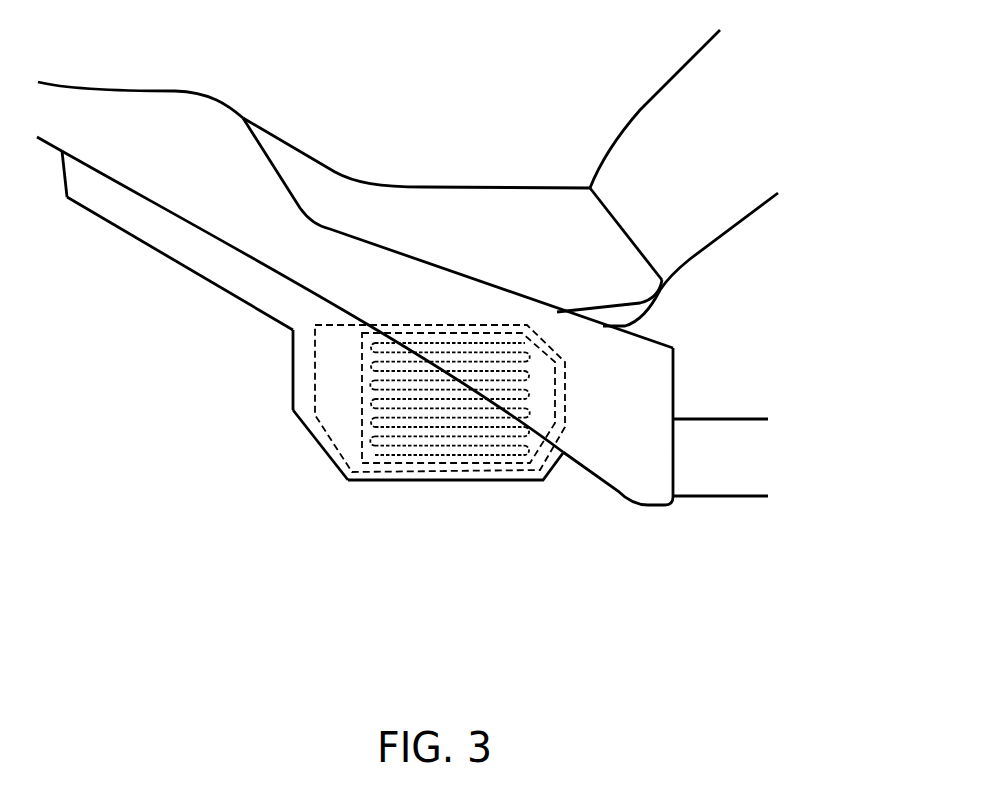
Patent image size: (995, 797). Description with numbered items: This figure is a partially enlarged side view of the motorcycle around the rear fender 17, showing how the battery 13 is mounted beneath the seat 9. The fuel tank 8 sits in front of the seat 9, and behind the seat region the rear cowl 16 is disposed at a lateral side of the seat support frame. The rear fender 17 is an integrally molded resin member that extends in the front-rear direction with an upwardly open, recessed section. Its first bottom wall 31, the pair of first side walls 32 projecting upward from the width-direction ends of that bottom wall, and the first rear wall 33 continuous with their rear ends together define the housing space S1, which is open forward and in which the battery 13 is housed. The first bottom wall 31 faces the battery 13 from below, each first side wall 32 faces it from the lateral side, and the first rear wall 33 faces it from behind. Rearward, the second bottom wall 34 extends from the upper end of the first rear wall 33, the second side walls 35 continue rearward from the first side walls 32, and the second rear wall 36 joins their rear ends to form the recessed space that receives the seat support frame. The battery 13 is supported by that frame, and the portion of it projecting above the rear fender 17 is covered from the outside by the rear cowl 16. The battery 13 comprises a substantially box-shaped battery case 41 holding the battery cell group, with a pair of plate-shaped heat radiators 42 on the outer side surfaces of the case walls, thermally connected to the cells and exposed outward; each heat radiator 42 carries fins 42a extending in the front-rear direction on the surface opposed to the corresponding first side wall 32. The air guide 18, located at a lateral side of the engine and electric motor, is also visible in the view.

The fuel tank 8 is at (628, 118).
The seat 9 is at (487, 188).
The battery 13 is at (440, 349).
The rear cowl 16 is at (652, 487).
The rear fender 17 is at (327, 463).
The air guide 18 is at (732, 480).
The first bottom wall 31 is at (363, 482).
The first side walls 32 is at (315, 405).
The first rear wall 33 is at (292, 368).
The second bottom wall 34 is at (118, 230).
The second side walls 35 is at (102, 195).
The second rear wall 36 is at (62, 173).
The battery case 41 is at (560, 477).
The heat radiators 42 is at (505, 483).
The fins 42a is at (420, 455).
The housing space S1 is at (457, 470).